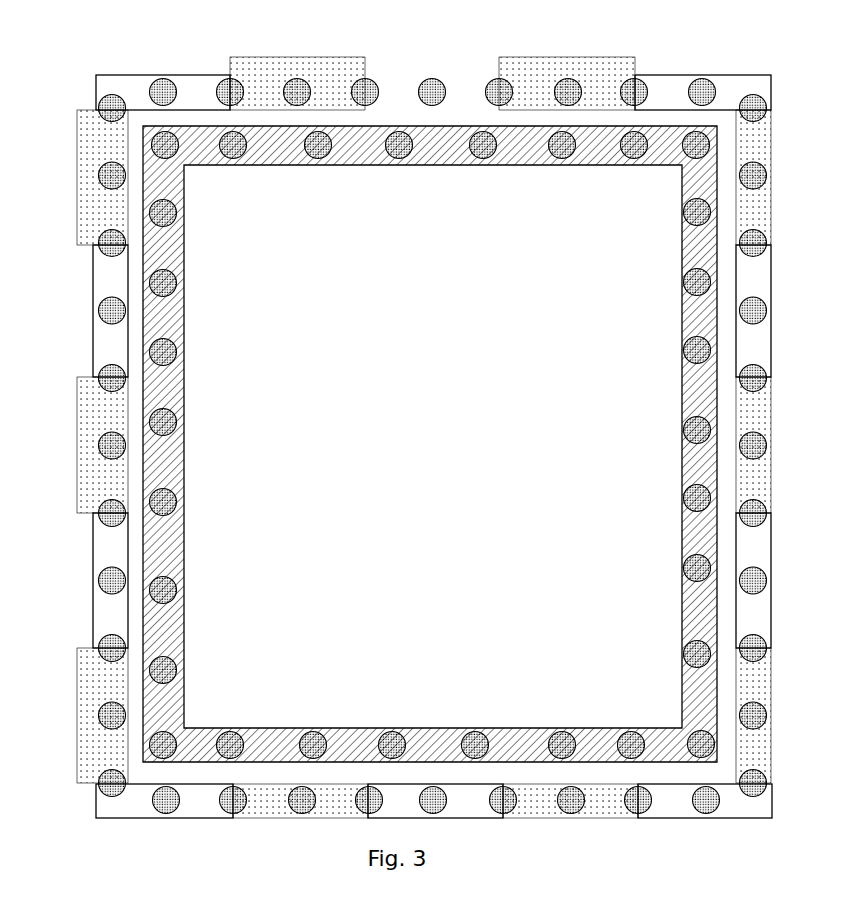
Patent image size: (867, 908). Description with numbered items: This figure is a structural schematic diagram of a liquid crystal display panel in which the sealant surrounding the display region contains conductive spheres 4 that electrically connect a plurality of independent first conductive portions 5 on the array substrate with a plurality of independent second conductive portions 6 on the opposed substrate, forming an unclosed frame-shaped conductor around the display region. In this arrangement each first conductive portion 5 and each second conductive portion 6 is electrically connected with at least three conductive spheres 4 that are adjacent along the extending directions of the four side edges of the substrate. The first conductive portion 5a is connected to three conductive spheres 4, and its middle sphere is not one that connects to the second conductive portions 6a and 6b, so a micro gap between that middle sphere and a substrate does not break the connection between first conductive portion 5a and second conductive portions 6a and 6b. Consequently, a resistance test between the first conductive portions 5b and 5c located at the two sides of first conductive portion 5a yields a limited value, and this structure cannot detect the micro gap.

The conductive sphere 4 is at (372, 90).
The first conductive portion 5 is at (268, 88).
The second conductive portion 6 is at (669, 92).
The first conductive portion 5a is at (87, 412).
The first conductive portion 5b is at (85, 202).
The first conductive portion 5c is at (88, 668).
The second conductive portion 6a is at (102, 283).
The second conductive portion 6b is at (103, 547).